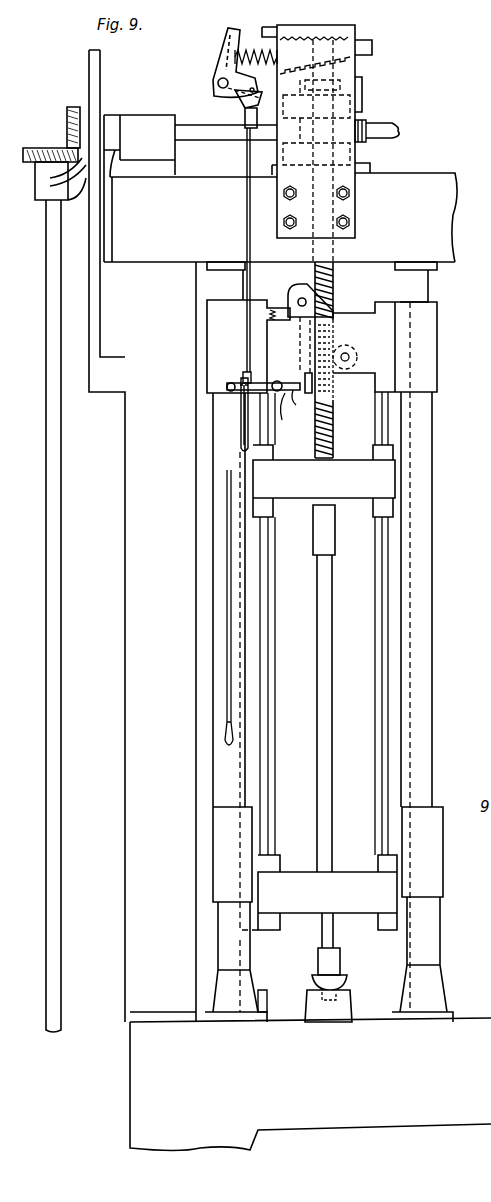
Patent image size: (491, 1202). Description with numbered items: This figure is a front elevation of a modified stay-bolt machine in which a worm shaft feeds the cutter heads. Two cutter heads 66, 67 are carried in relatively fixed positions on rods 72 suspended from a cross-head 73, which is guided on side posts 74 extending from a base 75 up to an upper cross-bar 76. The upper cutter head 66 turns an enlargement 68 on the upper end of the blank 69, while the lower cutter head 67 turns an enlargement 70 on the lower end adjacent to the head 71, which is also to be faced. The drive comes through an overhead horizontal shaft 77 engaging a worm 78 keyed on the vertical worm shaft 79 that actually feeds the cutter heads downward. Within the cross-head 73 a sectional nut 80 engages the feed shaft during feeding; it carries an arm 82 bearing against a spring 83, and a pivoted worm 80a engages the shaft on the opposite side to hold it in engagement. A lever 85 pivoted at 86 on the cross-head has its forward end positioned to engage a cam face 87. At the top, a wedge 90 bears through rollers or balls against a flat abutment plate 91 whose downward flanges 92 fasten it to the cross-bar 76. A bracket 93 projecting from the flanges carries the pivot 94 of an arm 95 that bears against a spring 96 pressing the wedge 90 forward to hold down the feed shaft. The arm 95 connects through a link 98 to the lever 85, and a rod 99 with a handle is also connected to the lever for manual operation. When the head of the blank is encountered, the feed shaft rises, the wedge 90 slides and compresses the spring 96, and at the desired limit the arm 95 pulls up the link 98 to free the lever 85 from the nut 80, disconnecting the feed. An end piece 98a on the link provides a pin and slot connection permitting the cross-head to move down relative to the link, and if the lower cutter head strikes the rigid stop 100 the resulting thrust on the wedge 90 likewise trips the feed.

The upper cutter head 66 is at (324, 481).
The lower cutter head 67 is at (327, 892).
The enlargement 68 is at (335, 540).
The blank 69 is at (331, 745).
The enlargement 70 is at (341, 962).
The head 71 is at (346, 984).
The rods 72 is at (380, 570).
The cross-head 73 is at (385, 347).
The side posts 74 is at (431, 452).
The base 75 is at (462, 1020).
The upper cross-bar 76 is at (280, 188).
The overhead horizontal shaft 77 is at (384, 124).
The worm 78 is at (366, 142).
The vertical screw or worm shaft 79 is at (334, 280).
The sectional nut 80 is at (304, 348).
The pivoted worm 80a is at (360, 353).
The arm 82 is at (290, 294).
The spring 83 is at (268, 313).
The lever 85 is at (279, 414).
The pivot 86 is at (277, 381).
The cam face 87 is at (300, 405).
The wedge 90 is at (364, 46).
The abutment plate 91 is at (320, 25).
The downward flanges 92 is at (348, 68).
The bracket 93 is at (233, 100).
The pivot 94 is at (441, 282).
The arm 95 is at (216, 62).
The spring 96 is at (250, 45).
The link 98 is at (246, 202).
The end piece 98a is at (242, 423).
The rod 99 is at (238, 458).
The rigid stop 100 is at (265, 990).